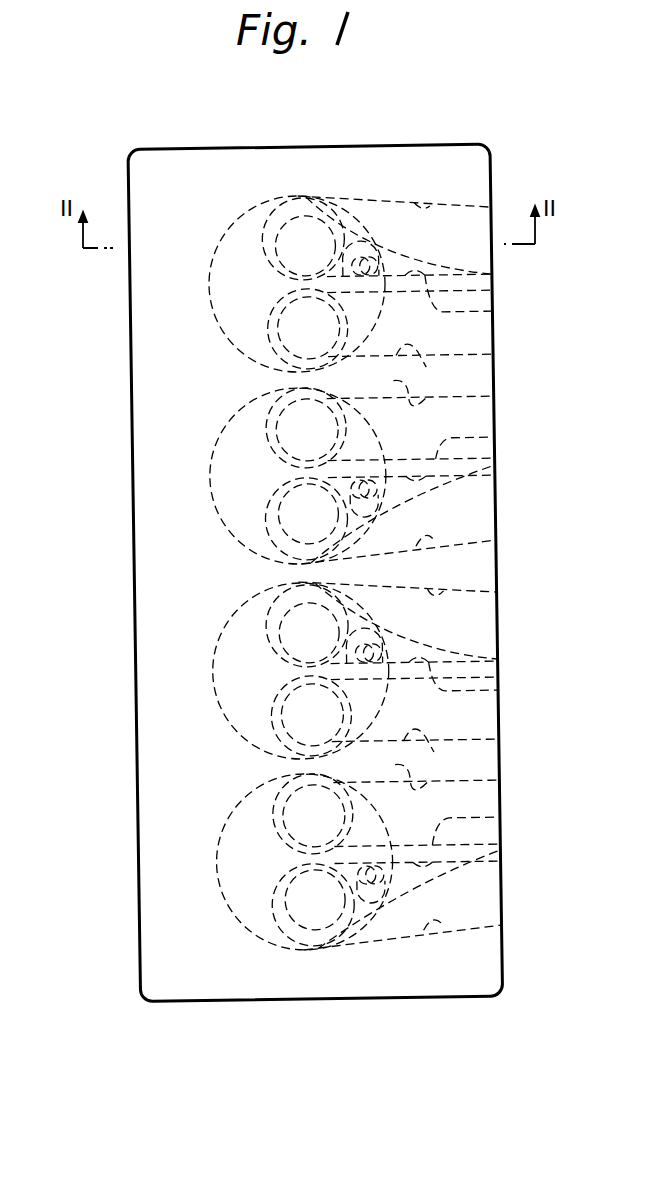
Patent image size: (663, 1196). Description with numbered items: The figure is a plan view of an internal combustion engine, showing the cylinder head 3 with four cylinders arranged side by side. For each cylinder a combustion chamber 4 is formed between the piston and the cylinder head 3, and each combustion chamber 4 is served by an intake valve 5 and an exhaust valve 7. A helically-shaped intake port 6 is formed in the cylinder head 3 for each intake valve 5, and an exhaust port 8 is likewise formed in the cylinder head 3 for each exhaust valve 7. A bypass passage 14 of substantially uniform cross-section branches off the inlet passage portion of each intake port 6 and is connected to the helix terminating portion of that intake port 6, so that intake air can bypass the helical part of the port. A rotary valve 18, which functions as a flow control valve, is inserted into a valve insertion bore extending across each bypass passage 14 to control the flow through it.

The cylinder head 3 is at (165, 155).
The combustion chamber 4 is at (218, 329).
The intake valve 5 is at (280, 240).
The helically-shaped intake port 6 is at (416, 205).
The exhaust valve 7 is at (291, 337).
The exhaust port 8 is at (413, 567).
The bypass passage 14 is at (492, 315).
The rotary valve 18 is at (395, 250).